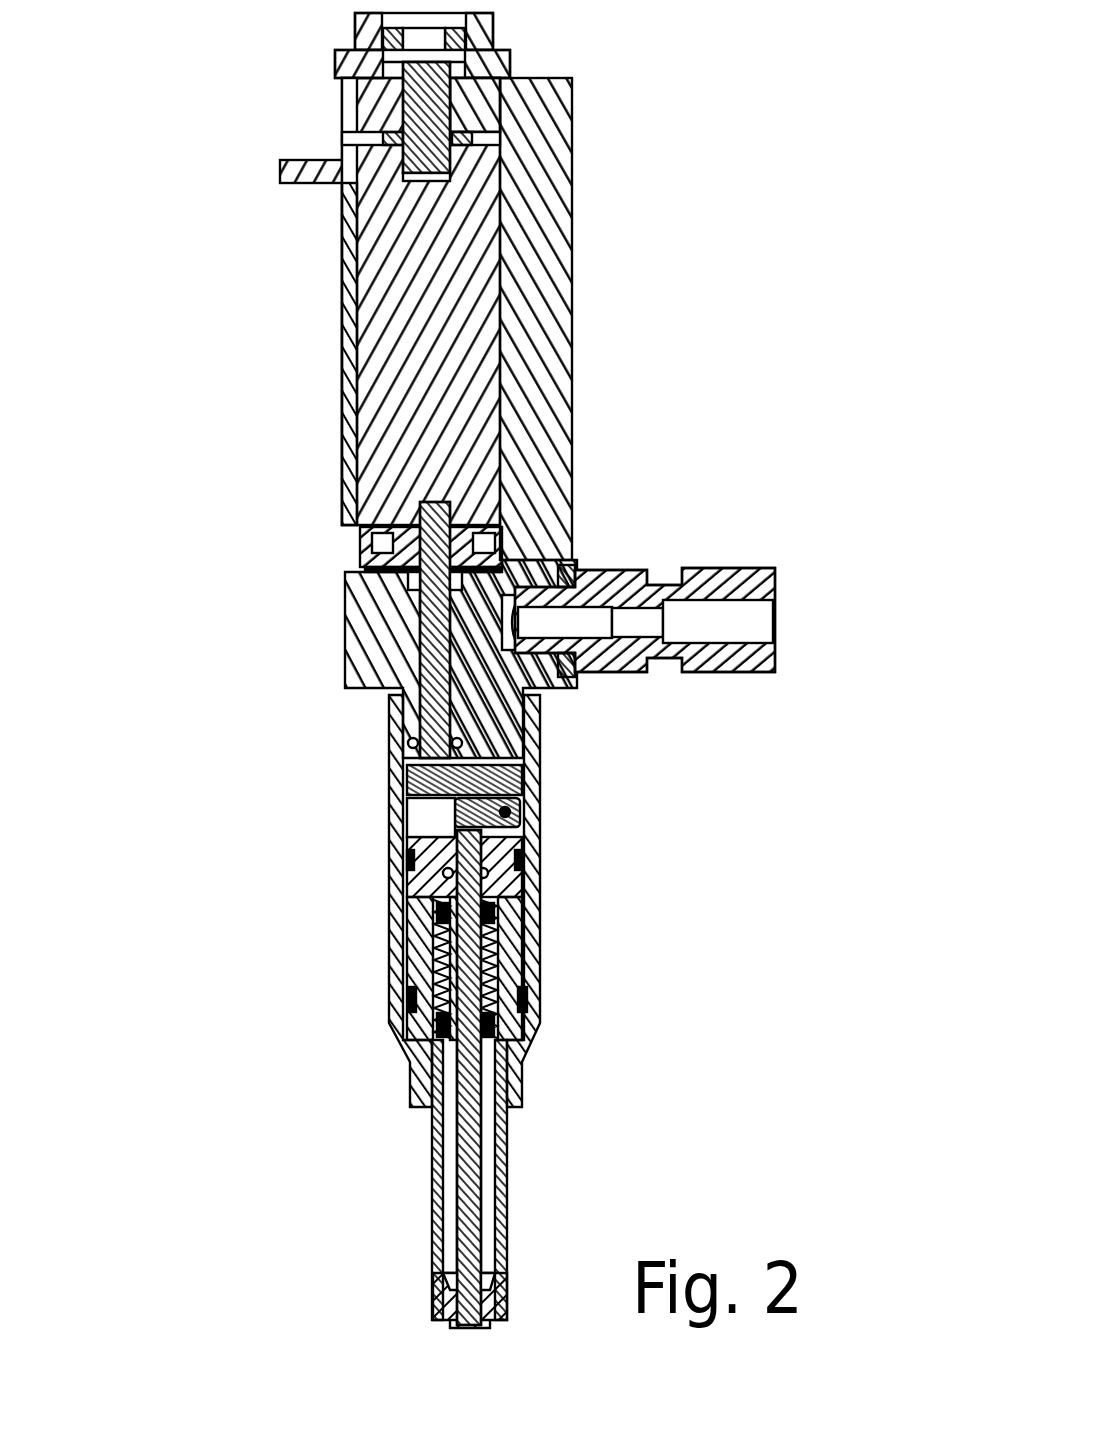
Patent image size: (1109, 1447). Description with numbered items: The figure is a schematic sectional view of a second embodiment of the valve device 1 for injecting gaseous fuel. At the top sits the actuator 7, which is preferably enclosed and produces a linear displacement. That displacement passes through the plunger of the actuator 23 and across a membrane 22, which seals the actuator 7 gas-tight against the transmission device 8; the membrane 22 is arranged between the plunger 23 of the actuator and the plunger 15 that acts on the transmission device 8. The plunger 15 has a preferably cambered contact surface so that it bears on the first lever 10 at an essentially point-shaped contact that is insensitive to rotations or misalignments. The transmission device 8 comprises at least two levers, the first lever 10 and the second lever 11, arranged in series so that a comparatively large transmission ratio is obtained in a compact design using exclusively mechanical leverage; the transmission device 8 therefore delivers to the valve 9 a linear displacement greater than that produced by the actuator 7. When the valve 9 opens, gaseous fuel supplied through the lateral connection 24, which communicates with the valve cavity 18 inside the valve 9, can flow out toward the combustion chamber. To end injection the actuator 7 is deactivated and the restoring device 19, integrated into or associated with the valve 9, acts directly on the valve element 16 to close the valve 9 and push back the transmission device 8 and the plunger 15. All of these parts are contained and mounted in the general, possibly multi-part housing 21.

The valve device 1 is at (663, 280).
The actuator 7 is at (417, 343).
The transmission device 8 is at (442, 800).
The valve 9 is at (455, 1237).
The first lever 10 is at (523, 768).
The second lever 11 is at (525, 806).
The plunger 15 is at (433, 636).
The valve element 16 is at (457, 1150).
The valve cavity 18 is at (488, 1168).
The restoring device 19 is at (433, 965).
The housing 21 is at (548, 688).
The membrane 22 is at (417, 587).
The plunger of actuator 23 is at (363, 543).
The lateral connection 24 is at (670, 577).